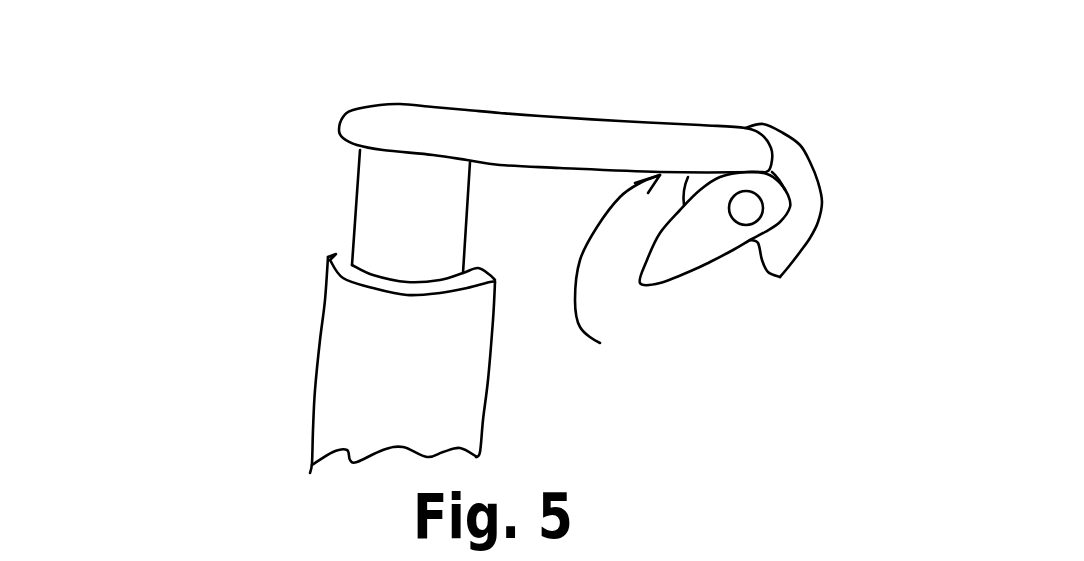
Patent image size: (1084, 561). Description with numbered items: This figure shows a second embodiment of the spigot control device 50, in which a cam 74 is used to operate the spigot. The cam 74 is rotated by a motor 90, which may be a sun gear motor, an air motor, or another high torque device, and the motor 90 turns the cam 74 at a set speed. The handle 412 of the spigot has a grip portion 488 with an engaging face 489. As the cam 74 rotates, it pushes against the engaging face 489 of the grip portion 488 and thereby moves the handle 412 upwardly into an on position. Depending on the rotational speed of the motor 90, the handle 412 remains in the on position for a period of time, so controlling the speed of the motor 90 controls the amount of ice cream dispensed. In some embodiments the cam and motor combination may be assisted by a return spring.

The handle 412 is at (283, 125).
The grip portion 488 is at (557, 112).
The engaging face 489 is at (600, 343).
The spigot control device 50 is at (823, 160).
The motor 90 is at (822, 208).
The cam 74 is at (780, 277).